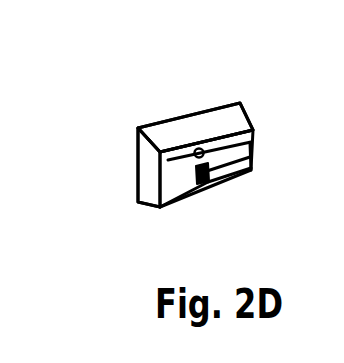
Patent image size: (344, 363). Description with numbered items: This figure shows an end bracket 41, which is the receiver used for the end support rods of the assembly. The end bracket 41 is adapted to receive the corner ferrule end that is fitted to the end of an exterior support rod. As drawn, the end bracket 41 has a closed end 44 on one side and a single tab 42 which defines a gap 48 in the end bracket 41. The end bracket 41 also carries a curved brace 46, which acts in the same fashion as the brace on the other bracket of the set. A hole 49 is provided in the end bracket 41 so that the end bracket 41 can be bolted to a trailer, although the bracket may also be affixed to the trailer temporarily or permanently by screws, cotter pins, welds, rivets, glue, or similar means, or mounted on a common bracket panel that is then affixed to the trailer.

The end bracket 41 is at (148, 124).
The tab 42 is at (250, 170).
The closed end 44 is at (143, 177).
The curved brace 46 is at (233, 120).
The gap 48 is at (178, 198).
The hole 49 is at (233, 138).